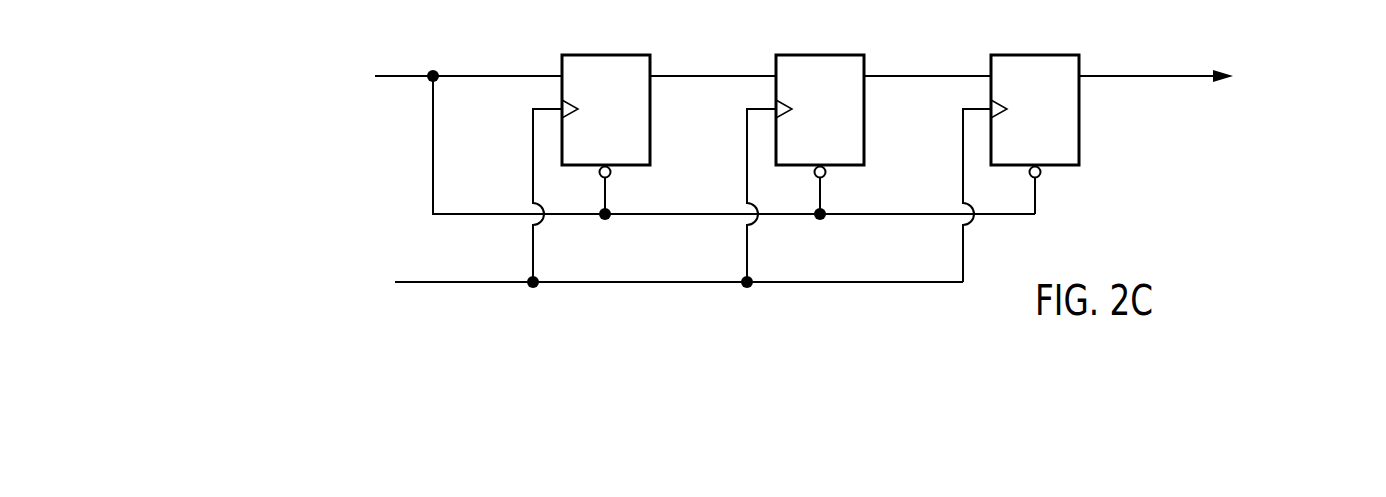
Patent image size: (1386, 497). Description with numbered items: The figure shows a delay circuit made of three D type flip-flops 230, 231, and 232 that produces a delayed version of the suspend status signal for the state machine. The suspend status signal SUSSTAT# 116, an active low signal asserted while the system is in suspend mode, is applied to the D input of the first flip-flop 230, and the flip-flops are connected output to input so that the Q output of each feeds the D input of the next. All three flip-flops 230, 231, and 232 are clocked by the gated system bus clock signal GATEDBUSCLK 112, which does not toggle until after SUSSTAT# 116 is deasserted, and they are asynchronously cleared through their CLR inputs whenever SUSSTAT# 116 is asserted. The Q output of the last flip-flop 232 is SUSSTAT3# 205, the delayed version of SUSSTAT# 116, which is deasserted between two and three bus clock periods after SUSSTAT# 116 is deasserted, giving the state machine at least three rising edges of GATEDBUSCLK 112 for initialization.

The suspend status signal (SUSSTAT#) 116 is at (645, 143).
The gated system bus clock signal (GATEDBUSCLK) 112 is at (610, 217).
The D type flip-flop 230 is at (594, 55).
The D type flip-flop 231 is at (808, 55).
The D type flip-flop 232 is at (1023, 55).
The SUSSTAT3# 205 is at (1220, 88).